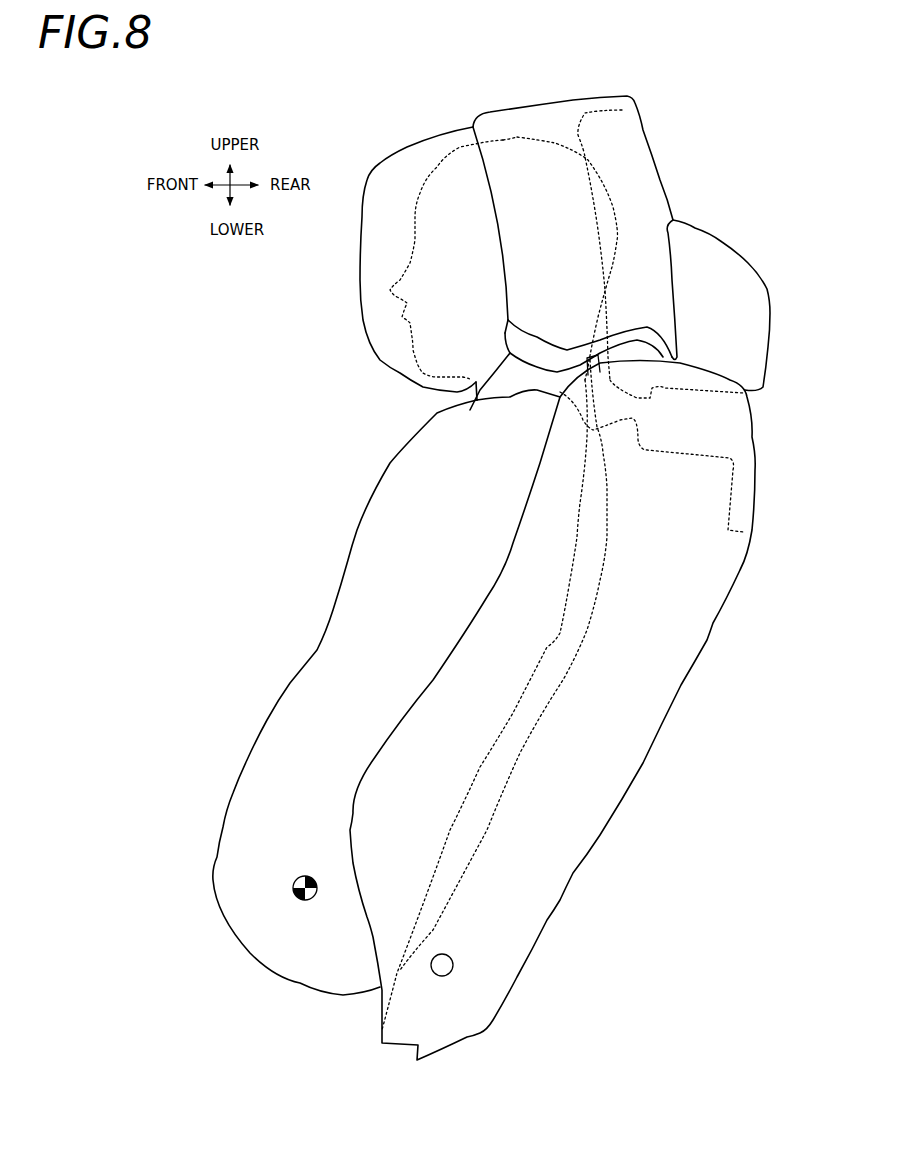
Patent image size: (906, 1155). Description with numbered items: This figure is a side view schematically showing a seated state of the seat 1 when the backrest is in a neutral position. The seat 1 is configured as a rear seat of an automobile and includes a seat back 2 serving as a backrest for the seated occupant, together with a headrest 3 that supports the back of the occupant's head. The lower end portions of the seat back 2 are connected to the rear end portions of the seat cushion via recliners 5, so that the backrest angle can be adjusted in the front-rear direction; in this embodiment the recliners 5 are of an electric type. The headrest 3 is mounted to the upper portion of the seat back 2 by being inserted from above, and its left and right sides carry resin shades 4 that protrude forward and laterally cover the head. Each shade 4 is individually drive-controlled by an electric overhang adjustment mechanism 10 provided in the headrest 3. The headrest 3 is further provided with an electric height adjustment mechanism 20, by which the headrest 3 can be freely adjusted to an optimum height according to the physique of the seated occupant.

The seat 1 is at (263, 384).
The seat back 2 is at (700, 607).
The headrest 3 is at (641, 153).
The overhang adjustment mechanism 10 is at (575, 228).
The height adjustment mechanism 20 is at (575, 228).
The shade 4 is at (385, 170).
The recliner 5 is at (448, 965).